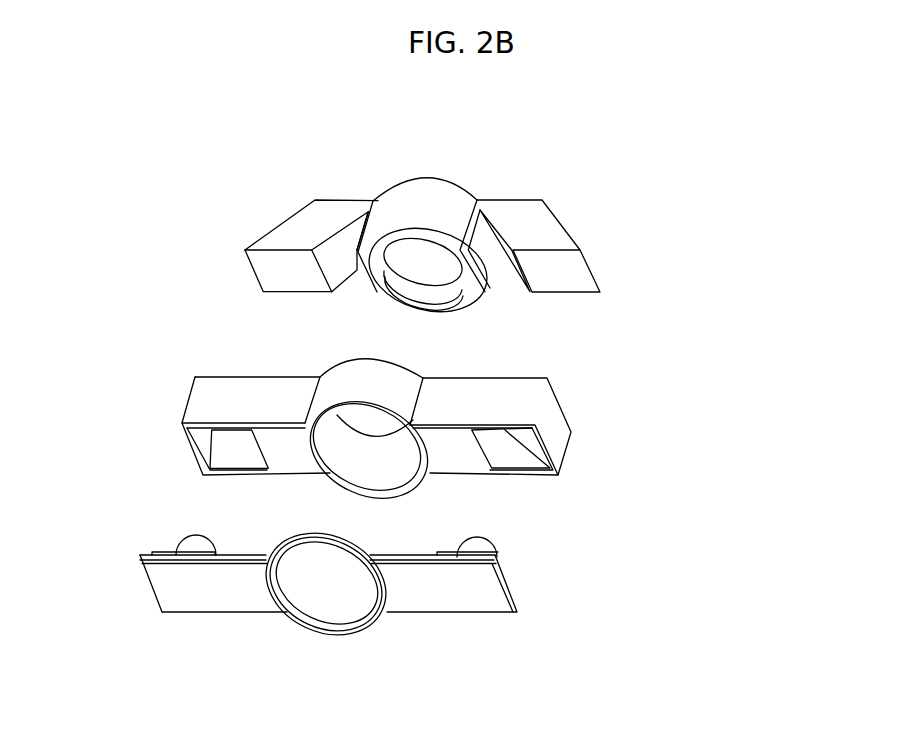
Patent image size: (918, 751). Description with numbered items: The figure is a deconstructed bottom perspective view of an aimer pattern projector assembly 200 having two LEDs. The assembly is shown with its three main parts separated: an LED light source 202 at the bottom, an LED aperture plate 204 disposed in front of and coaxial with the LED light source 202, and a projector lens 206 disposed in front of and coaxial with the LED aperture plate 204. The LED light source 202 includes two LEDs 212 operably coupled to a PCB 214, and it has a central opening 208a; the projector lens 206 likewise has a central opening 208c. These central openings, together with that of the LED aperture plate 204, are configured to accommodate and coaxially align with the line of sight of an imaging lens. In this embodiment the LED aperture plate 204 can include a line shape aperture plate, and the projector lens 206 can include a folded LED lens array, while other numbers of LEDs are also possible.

The aimer pattern projector assembly 200 is at (715, 142).
The LED light source 202 is at (518, 640).
The LED aperture plate 204 is at (562, 403).
The projector lens 206 is at (563, 217).
The central opening 208a is at (313, 588).
The central opening 208c is at (440, 177).
The LEDs 212 is at (198, 535).
The PCB 214 is at (230, 588).